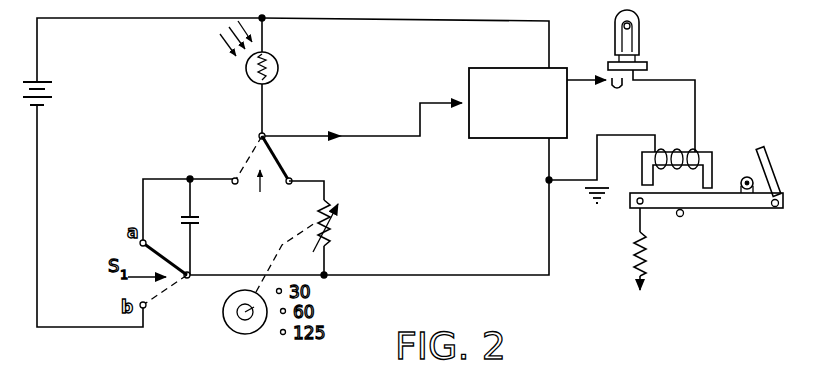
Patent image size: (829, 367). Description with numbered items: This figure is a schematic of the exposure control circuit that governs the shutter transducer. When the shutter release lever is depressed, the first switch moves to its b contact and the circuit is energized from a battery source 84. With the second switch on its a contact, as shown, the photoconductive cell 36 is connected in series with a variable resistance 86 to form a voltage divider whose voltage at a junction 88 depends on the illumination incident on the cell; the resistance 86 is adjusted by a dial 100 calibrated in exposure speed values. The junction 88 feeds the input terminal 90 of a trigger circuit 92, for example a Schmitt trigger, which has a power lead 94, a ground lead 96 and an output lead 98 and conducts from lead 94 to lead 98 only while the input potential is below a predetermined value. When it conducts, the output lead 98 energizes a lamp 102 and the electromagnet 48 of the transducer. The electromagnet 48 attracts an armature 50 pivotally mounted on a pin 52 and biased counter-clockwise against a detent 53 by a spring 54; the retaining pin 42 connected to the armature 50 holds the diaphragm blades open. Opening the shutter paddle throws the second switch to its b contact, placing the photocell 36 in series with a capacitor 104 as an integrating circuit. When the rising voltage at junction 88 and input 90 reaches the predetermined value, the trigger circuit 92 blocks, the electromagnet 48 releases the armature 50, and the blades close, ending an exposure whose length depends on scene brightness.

The battery source 84 is at (50, 81).
The photoconductive cell 36 is at (281, 70).
The junction 88 is at (264, 134).
The input terminal 90 is at (452, 103).
The trigger circuit 92 is at (494, 68).
The power lead 94 is at (554, 40).
The ground lead 96 is at (548, 165).
The output lead 98 is at (612, 78).
The lamp 102 is at (634, 36).
The electromagnet 48 is at (713, 165).
The armature 50 is at (703, 208).
The pin 52 is at (750, 190).
The retaining pin 42 is at (770, 182).
The detent 53 is at (680, 226).
The spring 54 is at (632, 252).
The capacitor 104 is at (192, 222).
The variable resistance 86 is at (335, 233).
The dial 100 is at (232, 330).